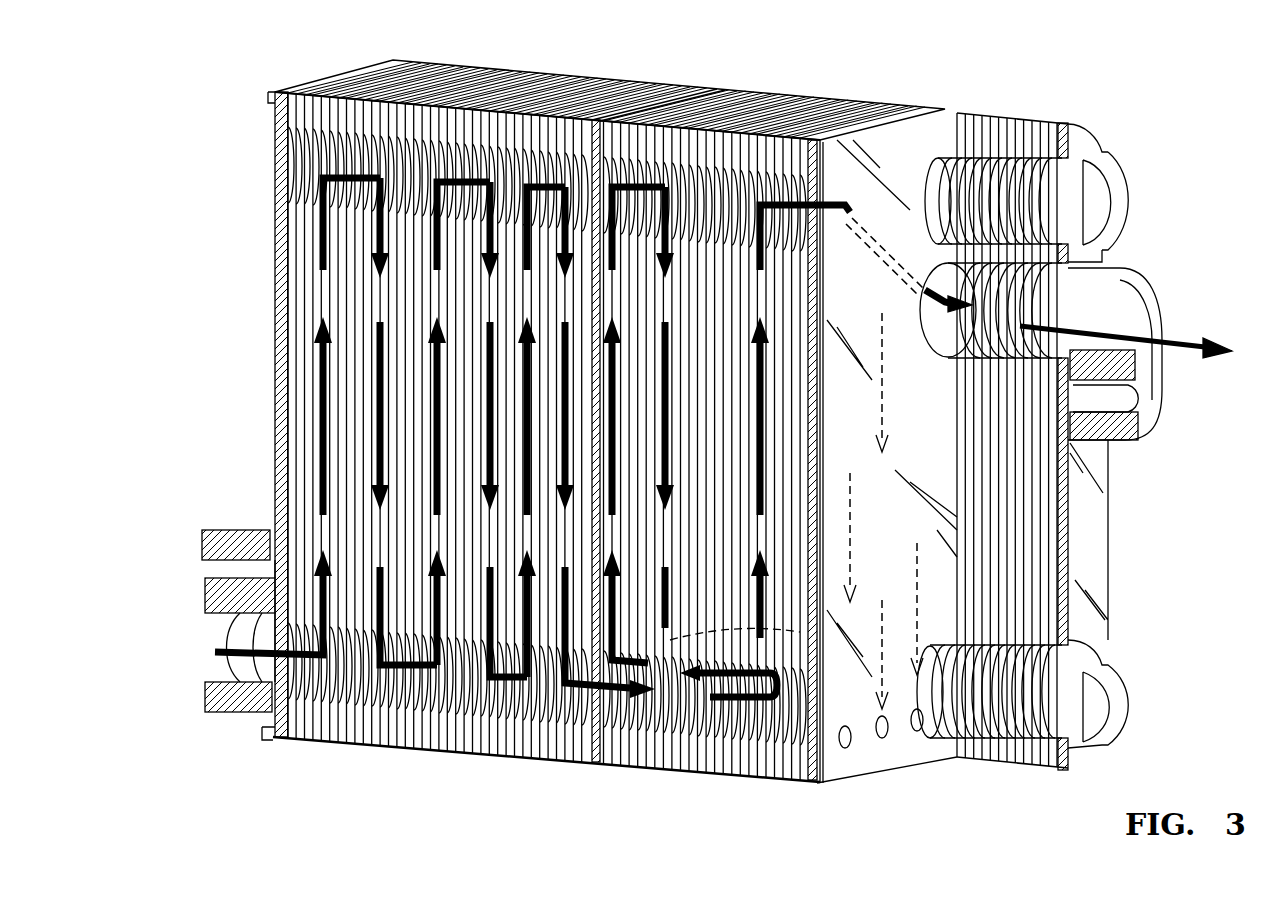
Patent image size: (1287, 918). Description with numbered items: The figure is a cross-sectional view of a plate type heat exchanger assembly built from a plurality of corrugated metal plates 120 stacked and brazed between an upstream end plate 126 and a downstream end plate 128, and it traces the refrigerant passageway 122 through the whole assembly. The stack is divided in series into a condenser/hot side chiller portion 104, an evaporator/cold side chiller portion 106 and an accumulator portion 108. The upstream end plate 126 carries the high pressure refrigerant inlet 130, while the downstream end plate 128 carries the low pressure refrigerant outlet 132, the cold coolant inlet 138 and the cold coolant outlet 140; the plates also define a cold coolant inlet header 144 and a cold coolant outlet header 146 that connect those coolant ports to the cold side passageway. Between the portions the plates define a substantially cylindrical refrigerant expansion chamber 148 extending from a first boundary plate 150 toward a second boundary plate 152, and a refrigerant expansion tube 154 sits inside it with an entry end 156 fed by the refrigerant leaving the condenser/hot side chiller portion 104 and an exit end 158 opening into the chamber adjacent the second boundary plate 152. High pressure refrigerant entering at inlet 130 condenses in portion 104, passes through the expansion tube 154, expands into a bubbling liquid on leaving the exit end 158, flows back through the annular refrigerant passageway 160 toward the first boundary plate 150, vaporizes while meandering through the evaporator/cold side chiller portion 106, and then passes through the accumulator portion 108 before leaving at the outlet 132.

The condenser/hot side chiller portion 104 is at (580, 763).
The evaporator/cold side chiller portion 106 is at (810, 796).
The accumulator portion 108 is at (1062, 775).
The corrugated metal plates 120 is at (610, 100).
The refrigerant passageway 122 is at (945, 116).
The upstream end plate 126 is at (272, 92).
The downstream end plate 128 is at (1078, 138).
The high pressure refrigerant inlet 130 is at (237, 673).
The low pressure refrigerant outlet 132 is at (1135, 315).
The cold coolant inlet 138 is at (1092, 190).
The cold coolant outlet 140 is at (1100, 657).
The cold coolant inlet header 144 is at (1035, 207).
The cold coolant outlet header 146 is at (1040, 690).
The refrigerant expansion chamber 148 is at (825, 740).
The first boundary plate 150 is at (620, 122).
The second boundary plate 152 is at (825, 145).
The refrigerant expansion tube 154 is at (655, 700).
The entry end 156 is at (537, 712).
The exit end 158 is at (790, 715).
The annular refrigerant passageway 160 is at (705, 705).